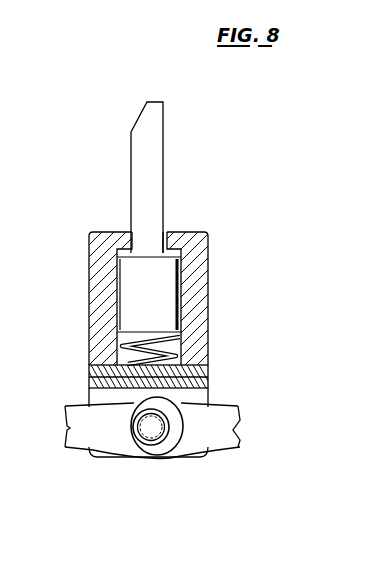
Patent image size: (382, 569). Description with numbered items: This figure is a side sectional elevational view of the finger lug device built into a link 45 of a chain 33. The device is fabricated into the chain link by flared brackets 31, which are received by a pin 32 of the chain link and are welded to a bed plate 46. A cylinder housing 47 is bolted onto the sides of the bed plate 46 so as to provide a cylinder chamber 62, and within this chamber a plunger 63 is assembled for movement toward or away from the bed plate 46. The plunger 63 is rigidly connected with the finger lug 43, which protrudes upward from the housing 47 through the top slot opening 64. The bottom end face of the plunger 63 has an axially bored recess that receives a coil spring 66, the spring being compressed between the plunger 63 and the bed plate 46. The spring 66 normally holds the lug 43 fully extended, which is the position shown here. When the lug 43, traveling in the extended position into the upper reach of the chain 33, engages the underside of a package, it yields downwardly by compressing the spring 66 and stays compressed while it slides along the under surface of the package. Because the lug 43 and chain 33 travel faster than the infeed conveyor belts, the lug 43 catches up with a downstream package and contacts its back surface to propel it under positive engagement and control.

The flared brackets 31 is at (89, 381).
The pin 32 is at (152, 432).
The chain 33 is at (238, 405).
The finger lug 43 is at (139, 117).
The link 45 is at (78, 428).
The bed plate 46 is at (89, 372).
The cylinder housing 47 is at (208, 258).
The cylinder chamber 62 is at (170, 339).
The plunger 63 is at (139, 298).
The top slot opening 64 is at (167, 230).
The coil spring 66 is at (175, 343).